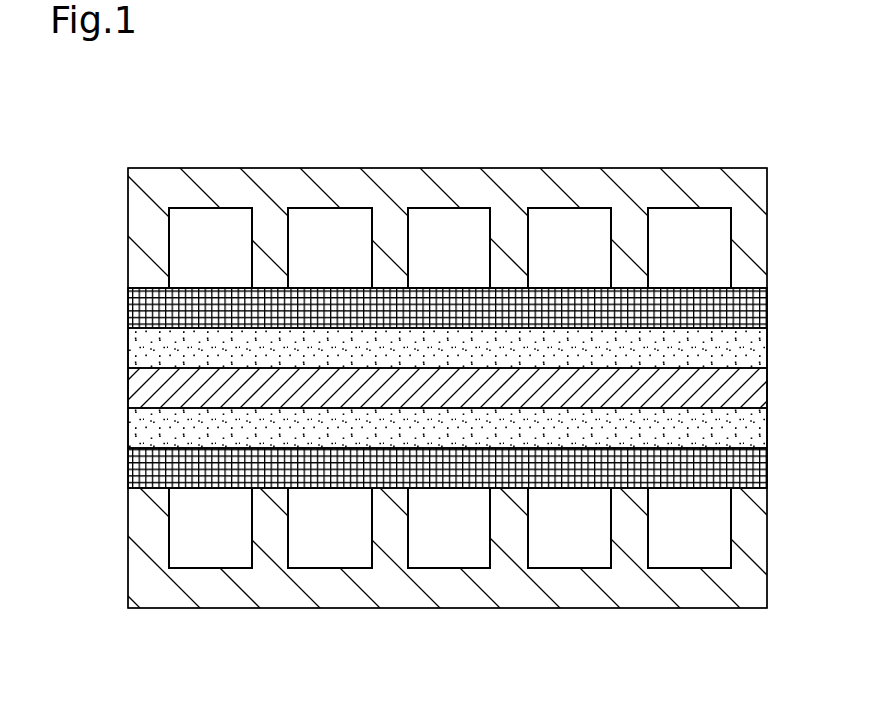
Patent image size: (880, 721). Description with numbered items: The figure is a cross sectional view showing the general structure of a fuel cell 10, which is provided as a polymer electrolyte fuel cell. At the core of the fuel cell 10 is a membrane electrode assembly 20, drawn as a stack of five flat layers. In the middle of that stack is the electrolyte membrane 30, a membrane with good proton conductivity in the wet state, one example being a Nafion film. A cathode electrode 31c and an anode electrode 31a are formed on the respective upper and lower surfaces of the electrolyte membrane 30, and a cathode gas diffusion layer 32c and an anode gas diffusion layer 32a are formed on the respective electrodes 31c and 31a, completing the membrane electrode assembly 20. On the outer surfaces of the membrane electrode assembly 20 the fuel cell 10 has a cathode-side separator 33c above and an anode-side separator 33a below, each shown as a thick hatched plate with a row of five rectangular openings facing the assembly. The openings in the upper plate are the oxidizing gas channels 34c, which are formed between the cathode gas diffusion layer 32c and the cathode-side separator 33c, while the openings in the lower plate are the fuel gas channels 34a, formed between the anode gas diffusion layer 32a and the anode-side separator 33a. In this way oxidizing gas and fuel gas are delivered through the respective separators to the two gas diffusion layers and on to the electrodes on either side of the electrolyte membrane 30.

The fuel cell 10 is at (78, 151).
The membrane electrode assembly 20 is at (50, 293).
The electrolyte membrane 30 is at (128, 389).
The anode electrode 31a is at (128, 431).
The cathode electrode 31c is at (128, 347).
The anode gas diffusion layer 32a is at (128, 481).
The cathode gas diffusion layer 32c is at (128, 294).
The anode-side separator 33a is at (152, 610).
The cathode-side separator 33c is at (148, 168).
The fuel gas channels 34a is at (695, 548).
The oxidizing gas channels 34c is at (700, 225).